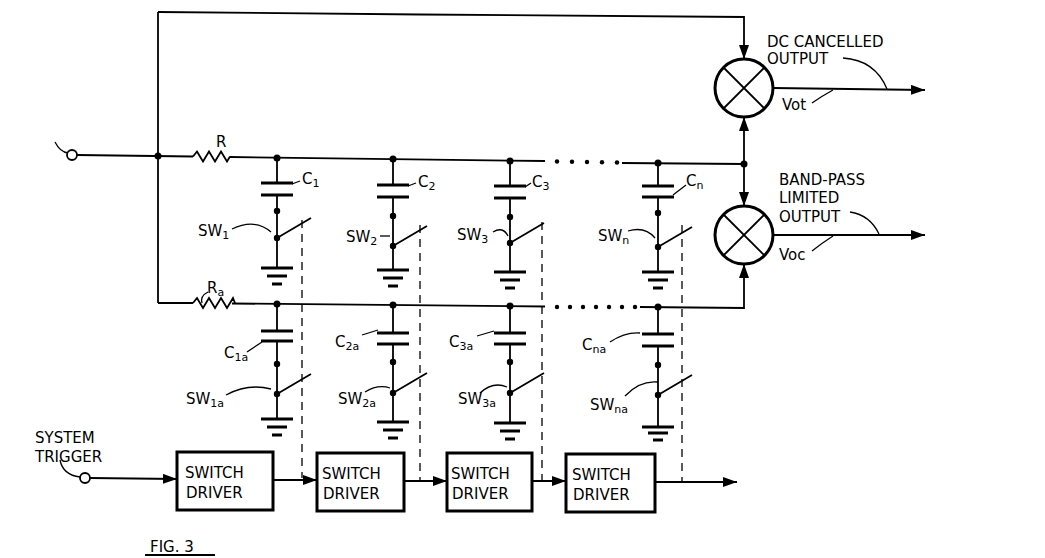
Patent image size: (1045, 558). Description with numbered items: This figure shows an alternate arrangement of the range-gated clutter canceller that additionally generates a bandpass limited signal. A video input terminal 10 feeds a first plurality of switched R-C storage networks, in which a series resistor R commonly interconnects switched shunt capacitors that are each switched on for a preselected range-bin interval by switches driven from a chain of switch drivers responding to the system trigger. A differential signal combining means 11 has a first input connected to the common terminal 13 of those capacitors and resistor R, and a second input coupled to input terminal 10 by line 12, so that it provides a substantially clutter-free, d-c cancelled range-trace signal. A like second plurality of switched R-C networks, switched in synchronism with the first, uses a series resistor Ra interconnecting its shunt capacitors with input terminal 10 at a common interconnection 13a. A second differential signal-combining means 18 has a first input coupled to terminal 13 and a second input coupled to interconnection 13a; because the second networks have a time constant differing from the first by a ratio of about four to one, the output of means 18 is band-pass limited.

The input terminal 10 is at (73, 161).
The differential signal combining means 11 is at (722, 90).
The line 12 is at (420, 14).
The common terminal 13 is at (278, 154).
The common interconnection 13a is at (277, 310).
The second differential signal-combining means 18 is at (751, 250).